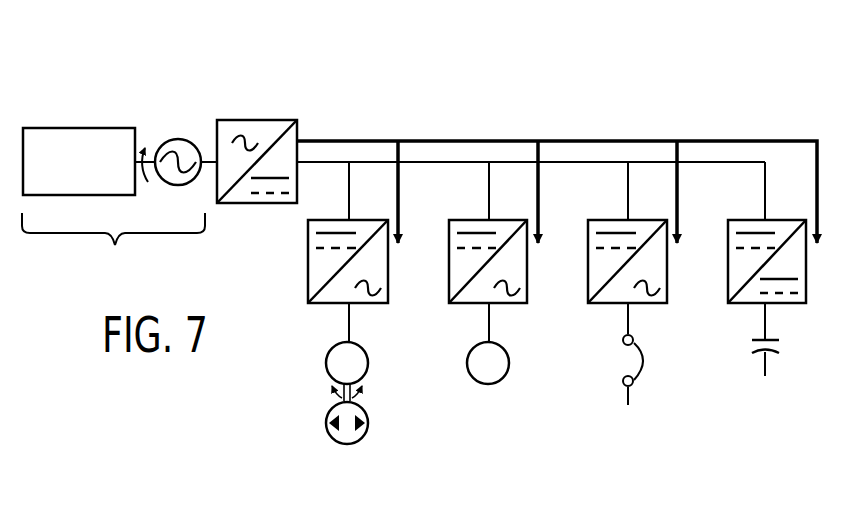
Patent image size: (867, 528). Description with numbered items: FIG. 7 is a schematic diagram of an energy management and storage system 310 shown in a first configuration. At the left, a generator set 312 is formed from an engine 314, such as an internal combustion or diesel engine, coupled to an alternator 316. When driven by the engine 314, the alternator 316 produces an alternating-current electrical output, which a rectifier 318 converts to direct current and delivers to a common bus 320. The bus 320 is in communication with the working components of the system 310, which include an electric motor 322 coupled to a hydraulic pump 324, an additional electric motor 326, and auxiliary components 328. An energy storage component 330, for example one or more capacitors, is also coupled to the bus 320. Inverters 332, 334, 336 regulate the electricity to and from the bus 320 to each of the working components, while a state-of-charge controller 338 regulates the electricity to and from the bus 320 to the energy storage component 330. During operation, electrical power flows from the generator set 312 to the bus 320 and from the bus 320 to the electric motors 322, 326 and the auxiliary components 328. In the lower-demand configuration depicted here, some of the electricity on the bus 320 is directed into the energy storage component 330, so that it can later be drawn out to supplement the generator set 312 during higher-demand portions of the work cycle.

The energy management and storage system 310 is at (232, 50).
The generator set 312 is at (113, 247).
The engine 314 is at (98, 176).
The alternator 316 is at (160, 143).
The rectifier 318 is at (257, 118).
The common bus 320 is at (453, 160).
The electric motor 322 is at (329, 364).
The hydraulic pump 324 is at (332, 440).
The additional electric motor 326 is at (472, 381).
The auxiliary components 328 is at (622, 387).
The energy storage component 330 is at (762, 355).
The inverter 332 is at (308, 262).
The inverter 334 is at (449, 262).
The inverter 336 is at (588, 262).
The state-of-charge controller 338 is at (728, 262).